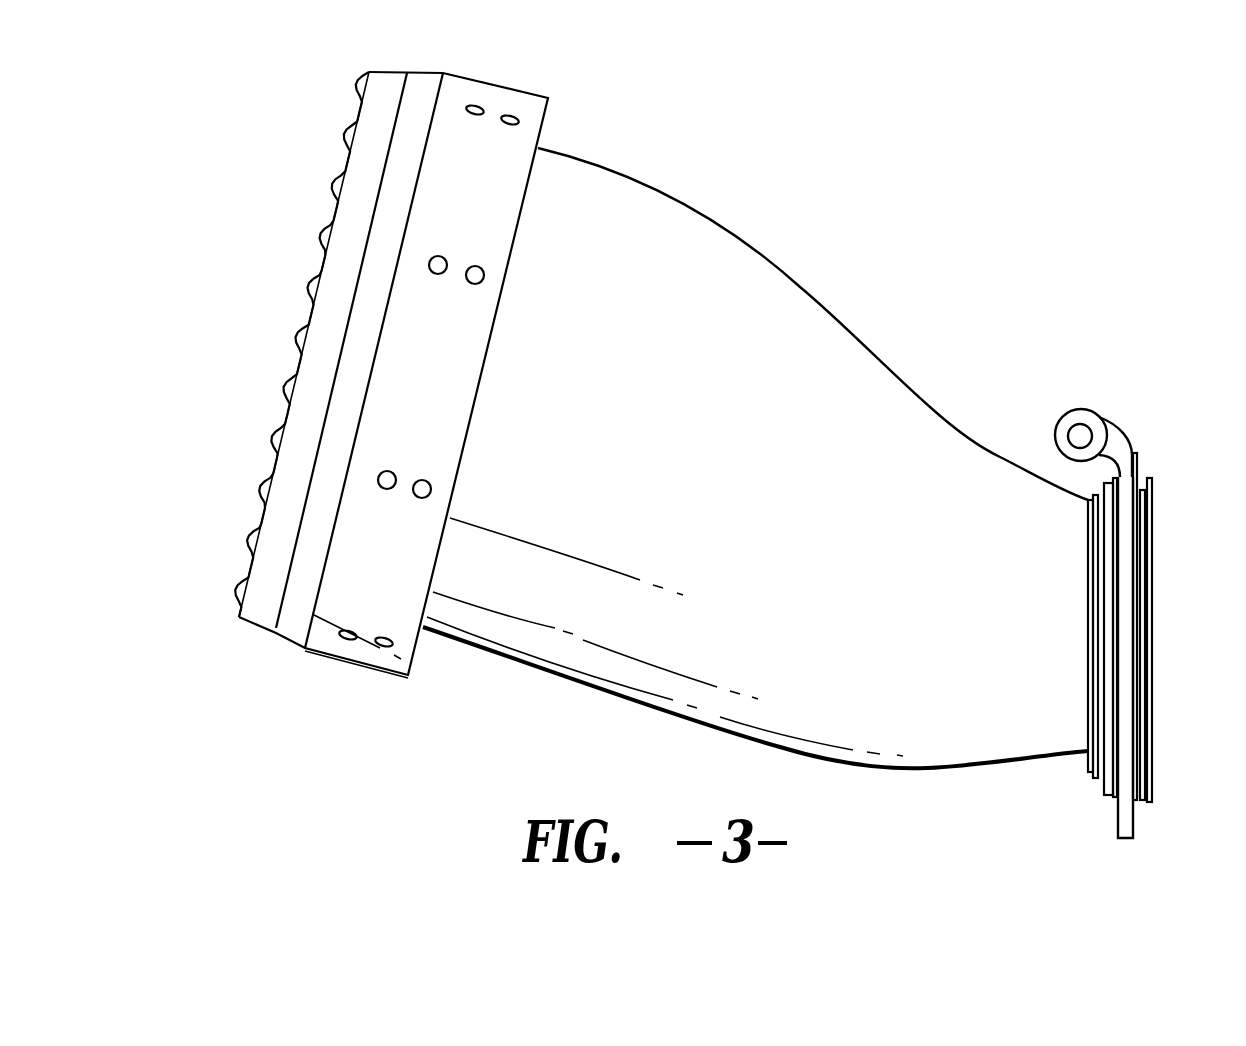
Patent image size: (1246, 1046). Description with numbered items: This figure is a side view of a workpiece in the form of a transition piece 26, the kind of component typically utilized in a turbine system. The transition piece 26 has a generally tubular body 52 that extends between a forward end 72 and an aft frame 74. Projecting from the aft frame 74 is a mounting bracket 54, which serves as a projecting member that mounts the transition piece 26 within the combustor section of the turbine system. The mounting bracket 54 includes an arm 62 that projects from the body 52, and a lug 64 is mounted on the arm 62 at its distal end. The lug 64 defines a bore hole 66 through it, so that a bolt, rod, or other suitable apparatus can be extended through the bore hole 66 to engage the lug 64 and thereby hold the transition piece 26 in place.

The transition piece 26 is at (1001, 269).
The body 52 is at (689, 245).
The mounting bracket 54 is at (1156, 432).
The arm 62 is at (1113, 438).
The lug 64 is at (1056, 430).
The bore hole 66 is at (1069, 420).
The forward end 72 is at (269, 650).
The aft frame 74 is at (1147, 825).